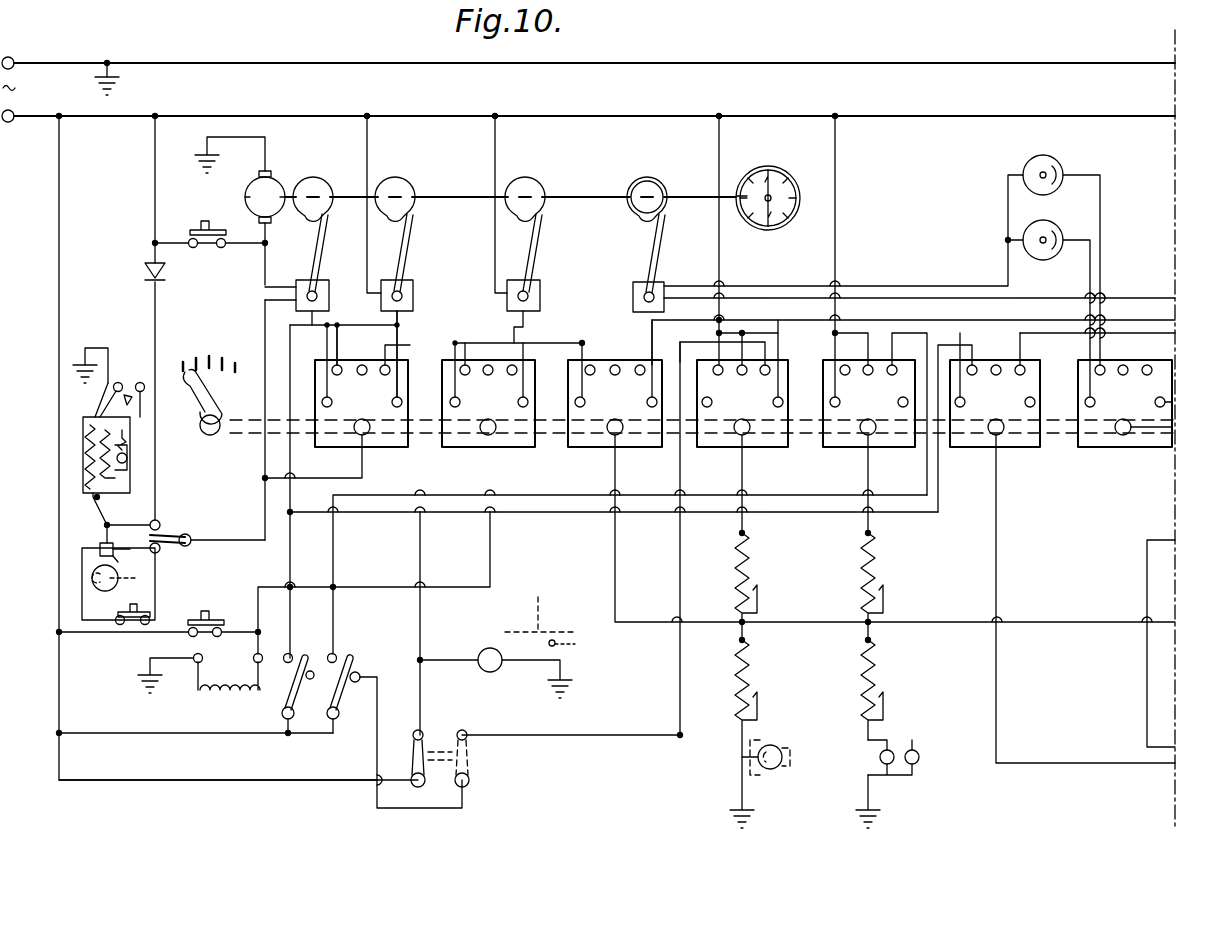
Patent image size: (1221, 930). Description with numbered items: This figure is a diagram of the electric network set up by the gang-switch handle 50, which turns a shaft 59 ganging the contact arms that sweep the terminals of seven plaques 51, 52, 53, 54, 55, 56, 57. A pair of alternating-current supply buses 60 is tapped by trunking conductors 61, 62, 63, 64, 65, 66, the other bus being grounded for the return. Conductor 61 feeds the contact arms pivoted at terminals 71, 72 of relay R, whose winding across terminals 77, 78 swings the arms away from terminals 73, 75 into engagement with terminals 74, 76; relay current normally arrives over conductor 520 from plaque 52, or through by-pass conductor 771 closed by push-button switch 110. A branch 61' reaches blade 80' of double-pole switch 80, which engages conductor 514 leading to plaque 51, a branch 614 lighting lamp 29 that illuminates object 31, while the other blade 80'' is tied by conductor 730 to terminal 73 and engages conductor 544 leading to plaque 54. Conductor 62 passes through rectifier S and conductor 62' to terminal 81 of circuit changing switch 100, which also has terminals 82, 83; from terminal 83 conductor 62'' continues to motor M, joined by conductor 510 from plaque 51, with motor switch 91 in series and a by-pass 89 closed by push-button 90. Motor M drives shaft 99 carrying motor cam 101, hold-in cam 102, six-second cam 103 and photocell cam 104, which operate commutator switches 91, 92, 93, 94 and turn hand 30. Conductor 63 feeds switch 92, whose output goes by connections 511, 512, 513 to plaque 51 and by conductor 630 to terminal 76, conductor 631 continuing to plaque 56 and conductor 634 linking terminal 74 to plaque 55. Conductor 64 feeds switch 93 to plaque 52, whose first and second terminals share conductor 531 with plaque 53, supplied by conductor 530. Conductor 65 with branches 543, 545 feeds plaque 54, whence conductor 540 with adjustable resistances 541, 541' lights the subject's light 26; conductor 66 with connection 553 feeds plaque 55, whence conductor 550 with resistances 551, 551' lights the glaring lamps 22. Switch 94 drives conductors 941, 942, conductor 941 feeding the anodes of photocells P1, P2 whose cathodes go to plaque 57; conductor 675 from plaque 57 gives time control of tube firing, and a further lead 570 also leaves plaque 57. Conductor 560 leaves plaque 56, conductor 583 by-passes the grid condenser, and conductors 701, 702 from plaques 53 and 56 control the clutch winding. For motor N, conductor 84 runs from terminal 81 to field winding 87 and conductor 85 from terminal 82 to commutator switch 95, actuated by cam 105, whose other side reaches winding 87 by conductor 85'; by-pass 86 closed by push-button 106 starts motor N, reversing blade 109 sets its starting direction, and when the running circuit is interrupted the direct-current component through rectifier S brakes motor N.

The A. C. supply buses 60 is at (47, 64).
The trunking conductor 61 is at (217, 448).
The parallel branch conductor 61' is at (218, 793).
The trunking conductor 62 is at (132, 318).
The conductor 62' is at (174, 461).
The conductor 62'' is at (243, 420).
The trunking conductor 63 is at (367, 142).
The trunking conductor 64 is at (495, 142).
The trunking conductor 65 is at (719, 142).
The trunking conductor 66 is at (835, 142).
The rectifying device S is at (127, 283).
The motor M is at (292, 163).
The by-pass conductor 89 is at (175, 245).
The push-button switch 90 is at (209, 219).
The shaft 99 is at (585, 197).
The motor cam 101 is at (313, 190).
The hold-in cam 102 is at (400, 190).
The six-second cam 103 is at (530, 190).
The photocell cam 104 is at (652, 190).
The hand 30 is at (775, 192).
The automatic motor controlling switch 91 is at (300, 280).
The commutator switch 92 is at (410, 280).
The commutator switch 93 is at (537, 280).
The commutator switch 94 is at (664, 285).
The conductor 941 is at (748, 286).
The conductor 942 is at (780, 298).
The branch conductor 543 is at (762, 319).
The branch conductor 545 is at (778, 325).
The connection conductor 553 is at (840, 333).
The conductor 701 is at (915, 320).
The conductor 702 is at (1158, 321).
The photocell P1 is at (1051, 301).
The photocell P2 is at (1064, 253).
The shaft 59 is at (225, 440).
The gang-switch handle 50 is at (205, 395).
The plaque 51 is at (312, 355).
The parallel connection conductor 511 is at (328, 383).
The parallel connection conductor 512 is at (348, 342).
The parallel connection conductor 513 is at (410, 318).
The conductor 510 is at (362, 472).
The plaque 52 is at (442, 348).
The common conductor 531 is at (560, 343).
The plaque 53 is at (625, 355).
The plaque 54 is at (746, 390).
The plaque 55 is at (912, 355).
The plaque 56 is at (989, 422).
The plaque 57 is at (1147, 355).
The conductor 675 is at (1172, 402).
The conductor 570 is at (1172, 440).
The conductor 634 is at (567, 495).
The conductor 631 is at (555, 512).
The conductor 630 is at (290, 557).
The conductor 520 is at (490, 550).
The conductor 514 is at (420, 615).
The conductor 530 is at (615, 572).
The conductor 544 is at (588, 735).
The conductor 540 is at (742, 473).
The conductor 550 is at (868, 473).
The conductor 560 is at (996, 528).
The conductor 583 is at (1147, 667).
The adjustable resistance 541 is at (768, 588).
The adjustable resistance 541' is at (768, 734).
The adjustable resistance 551 is at (895, 588).
The adjustable resistance 551' is at (895, 734).
The subject's light 26 is at (778, 748).
The lamps 22 is at (895, 764).
The motor N is at (108, 338).
The reversing switch blade 109 is at (128, 390).
The field winding 87 is at (83, 460).
The conductor 85' is at (62, 509).
The conductor 84 is at (128, 525).
The terminal 81 is at (158, 520).
The circuit changing switch 100 is at (228, 528).
The terminal 83 is at (190, 546).
The commutator switch 95 is at (93, 543).
The conductor 85 is at (129, 545).
The terminal 82 is at (158, 553).
The cam 105 is at (92, 580).
The push-button switch 106 is at (147, 606).
The by-pass conductor 86 is at (149, 585).
The by-pass conductor 771 is at (95, 640).
The push-button switch 110 is at (207, 610).
The relay terminal 78 is at (202, 660).
The relay R is at (236, 715).
The relay terminal 77 is at (263, 655).
The relay terminal 76 is at (292, 655).
The relay terminal 74 is at (336, 655).
The relay terminal 75 is at (312, 679).
The relay terminal 73 is at (360, 674).
The relay terminal 71 is at (280, 716).
The relay terminal 72 is at (326, 716).
The conductor 730 is at (377, 758).
The switch blade 80' is at (437, 746).
The switch blade 80'' is at (470, 758).
The double-pole switch 80 is at (491, 793).
The parallel branch conductor 614 is at (448, 660).
The lamp 29 is at (480, 648).
The object 31 is at (554, 630).